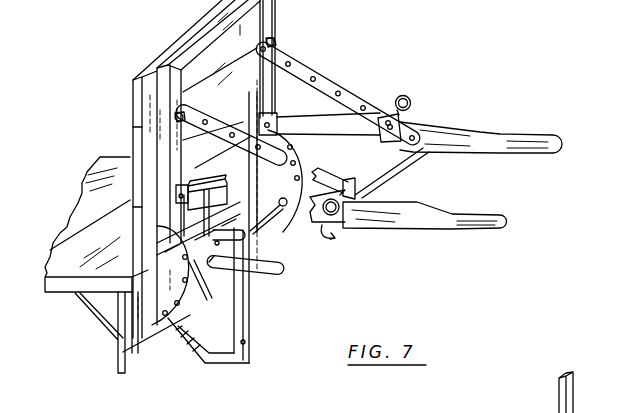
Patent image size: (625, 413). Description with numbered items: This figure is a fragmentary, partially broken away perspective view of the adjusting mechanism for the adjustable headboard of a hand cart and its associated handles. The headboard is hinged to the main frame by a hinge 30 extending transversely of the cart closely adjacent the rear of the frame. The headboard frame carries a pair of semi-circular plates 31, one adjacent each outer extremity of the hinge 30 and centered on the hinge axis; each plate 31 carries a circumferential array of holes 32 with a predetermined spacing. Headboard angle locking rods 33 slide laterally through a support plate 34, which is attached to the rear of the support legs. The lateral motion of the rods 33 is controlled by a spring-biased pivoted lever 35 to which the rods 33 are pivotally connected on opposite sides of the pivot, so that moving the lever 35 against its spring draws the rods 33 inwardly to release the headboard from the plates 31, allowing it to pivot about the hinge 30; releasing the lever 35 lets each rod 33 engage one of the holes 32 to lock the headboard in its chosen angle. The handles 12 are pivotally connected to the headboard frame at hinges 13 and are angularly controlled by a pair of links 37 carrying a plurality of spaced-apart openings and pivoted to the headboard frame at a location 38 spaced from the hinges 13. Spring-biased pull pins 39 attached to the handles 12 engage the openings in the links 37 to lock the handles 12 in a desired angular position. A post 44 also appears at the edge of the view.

The handles 12 is at (477, 142).
The hinges 13 is at (187, 185).
The hinge 30 is at (118, 334).
The semi-circular plates 31 is at (296, 205).
The holes 32 is at (190, 263).
The headboard angle locking rods 33 is at (250, 238).
The support plate 34 is at (267, 210).
The lever 35 is at (268, 275).
The links 37 is at (291, 65).
The location 38 is at (274, 43).
The spring biased pull pins 39 is at (412, 106).
The post 44 is at (539, 392).